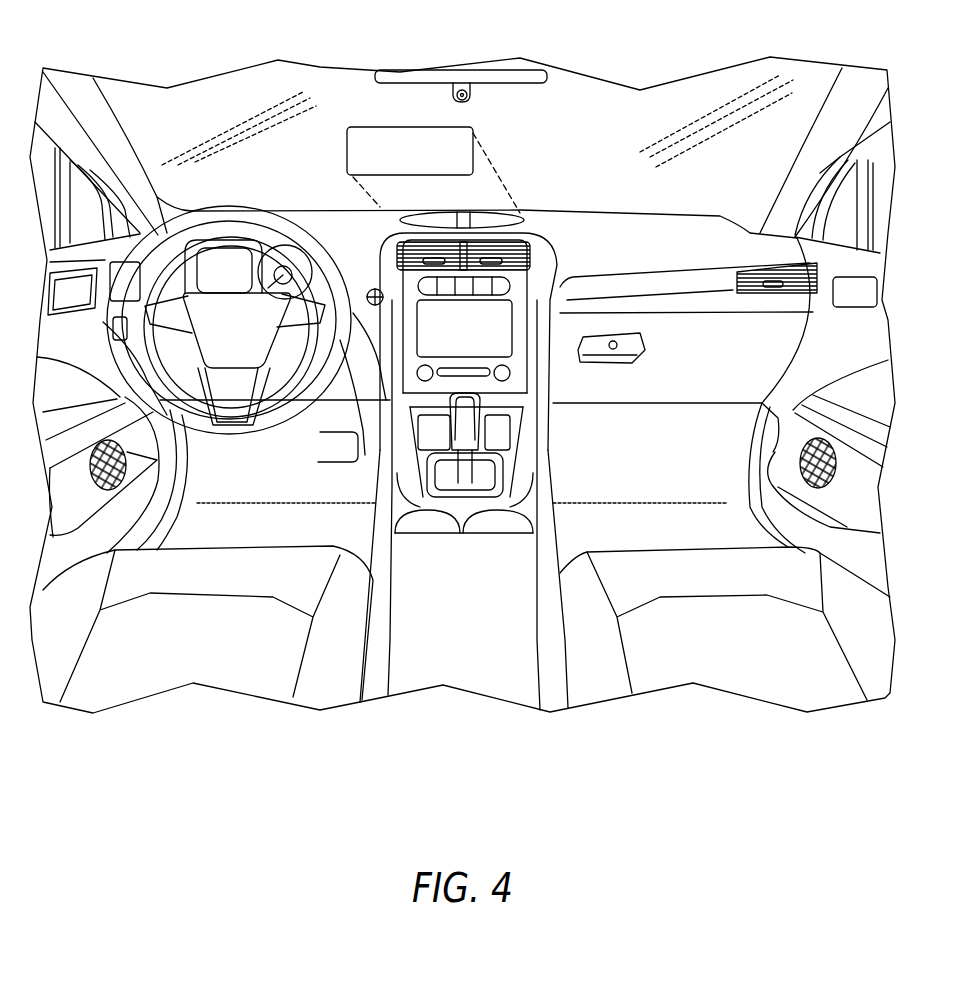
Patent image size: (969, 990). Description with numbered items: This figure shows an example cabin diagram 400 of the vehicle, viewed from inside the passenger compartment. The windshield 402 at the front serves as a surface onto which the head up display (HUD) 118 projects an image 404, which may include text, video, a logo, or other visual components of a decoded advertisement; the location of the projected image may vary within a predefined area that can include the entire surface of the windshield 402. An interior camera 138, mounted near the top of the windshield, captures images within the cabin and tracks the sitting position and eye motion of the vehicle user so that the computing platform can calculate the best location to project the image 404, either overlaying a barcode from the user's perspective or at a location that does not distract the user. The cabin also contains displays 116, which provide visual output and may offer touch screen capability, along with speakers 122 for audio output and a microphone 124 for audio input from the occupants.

The cabin diagram 400 is at (478, 789).
The windshield 402 is at (222, 103).
The image 404 is at (363, 127).
The interior camera 138 is at (468, 92).
The display 116 is at (230, 262).
The head up display (HUD) 118 is at (530, 223).
The speakers 122 is at (517, 287).
The microphone 124 is at (365, 453).